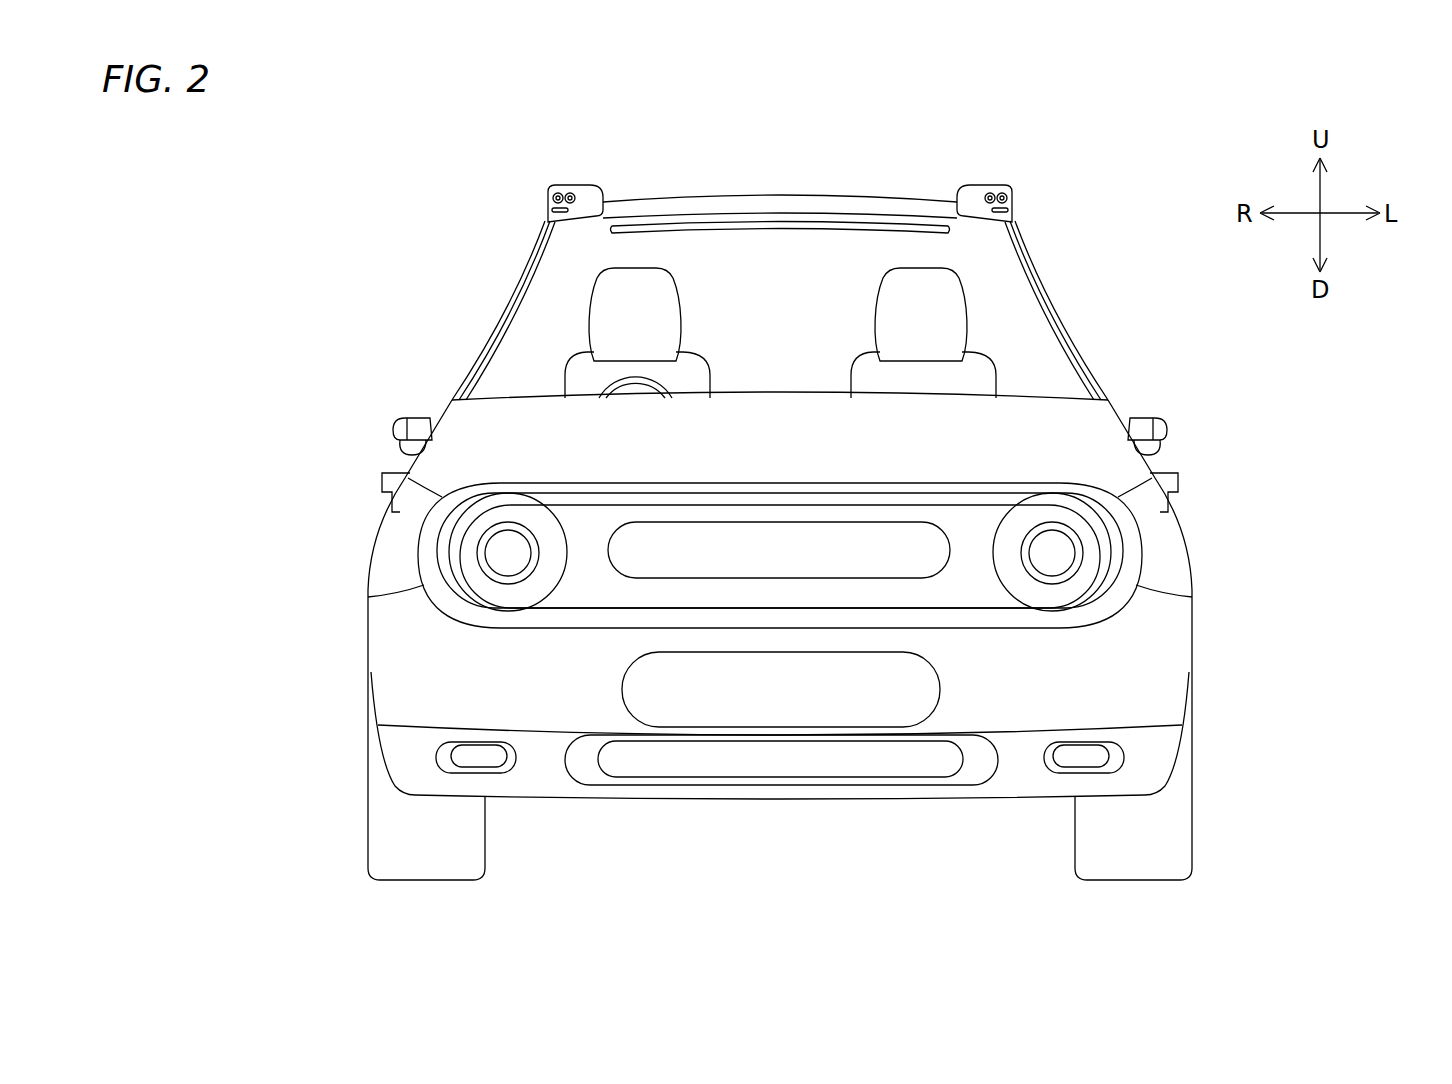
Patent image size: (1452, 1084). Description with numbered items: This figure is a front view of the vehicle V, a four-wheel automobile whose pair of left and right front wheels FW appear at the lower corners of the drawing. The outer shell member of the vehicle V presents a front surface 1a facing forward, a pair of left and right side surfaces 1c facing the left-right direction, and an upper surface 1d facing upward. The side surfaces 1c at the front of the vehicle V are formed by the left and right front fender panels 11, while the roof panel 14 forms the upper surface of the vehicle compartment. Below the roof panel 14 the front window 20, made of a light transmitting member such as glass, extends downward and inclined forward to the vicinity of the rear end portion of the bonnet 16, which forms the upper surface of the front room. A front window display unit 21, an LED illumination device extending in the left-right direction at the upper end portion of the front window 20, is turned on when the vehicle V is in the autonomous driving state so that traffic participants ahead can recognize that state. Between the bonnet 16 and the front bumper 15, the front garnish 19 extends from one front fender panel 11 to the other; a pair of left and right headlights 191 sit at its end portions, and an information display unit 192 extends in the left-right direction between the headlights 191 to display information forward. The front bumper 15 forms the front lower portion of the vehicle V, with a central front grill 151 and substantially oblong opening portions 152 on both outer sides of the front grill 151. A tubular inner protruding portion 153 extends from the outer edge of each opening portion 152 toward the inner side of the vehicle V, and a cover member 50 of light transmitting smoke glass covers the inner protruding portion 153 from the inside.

The vehicle V is at (327, 249).
The front surface 1a is at (401, 668).
The side surfaces 1c is at (480, 322).
The upper surface 1d is at (778, 196).
The front fender panels 11 is at (385, 565).
The roof panel 14 is at (921, 213).
The front bumper 15 is at (762, 697).
The front grill 151 is at (782, 757).
The opening portions 152 is at (488, 758).
The inner protruding portion 153 is at (510, 773).
The bonnet 16 is at (475, 432).
The front garnish 19 is at (822, 592).
The headlights 191 is at (507, 560).
The information display unit 192 is at (735, 538).
The front window 20 is at (830, 258).
The front window display unit 21 is at (722, 225).
The cover member 50 is at (473, 754).
The front wheels FW is at (425, 868).